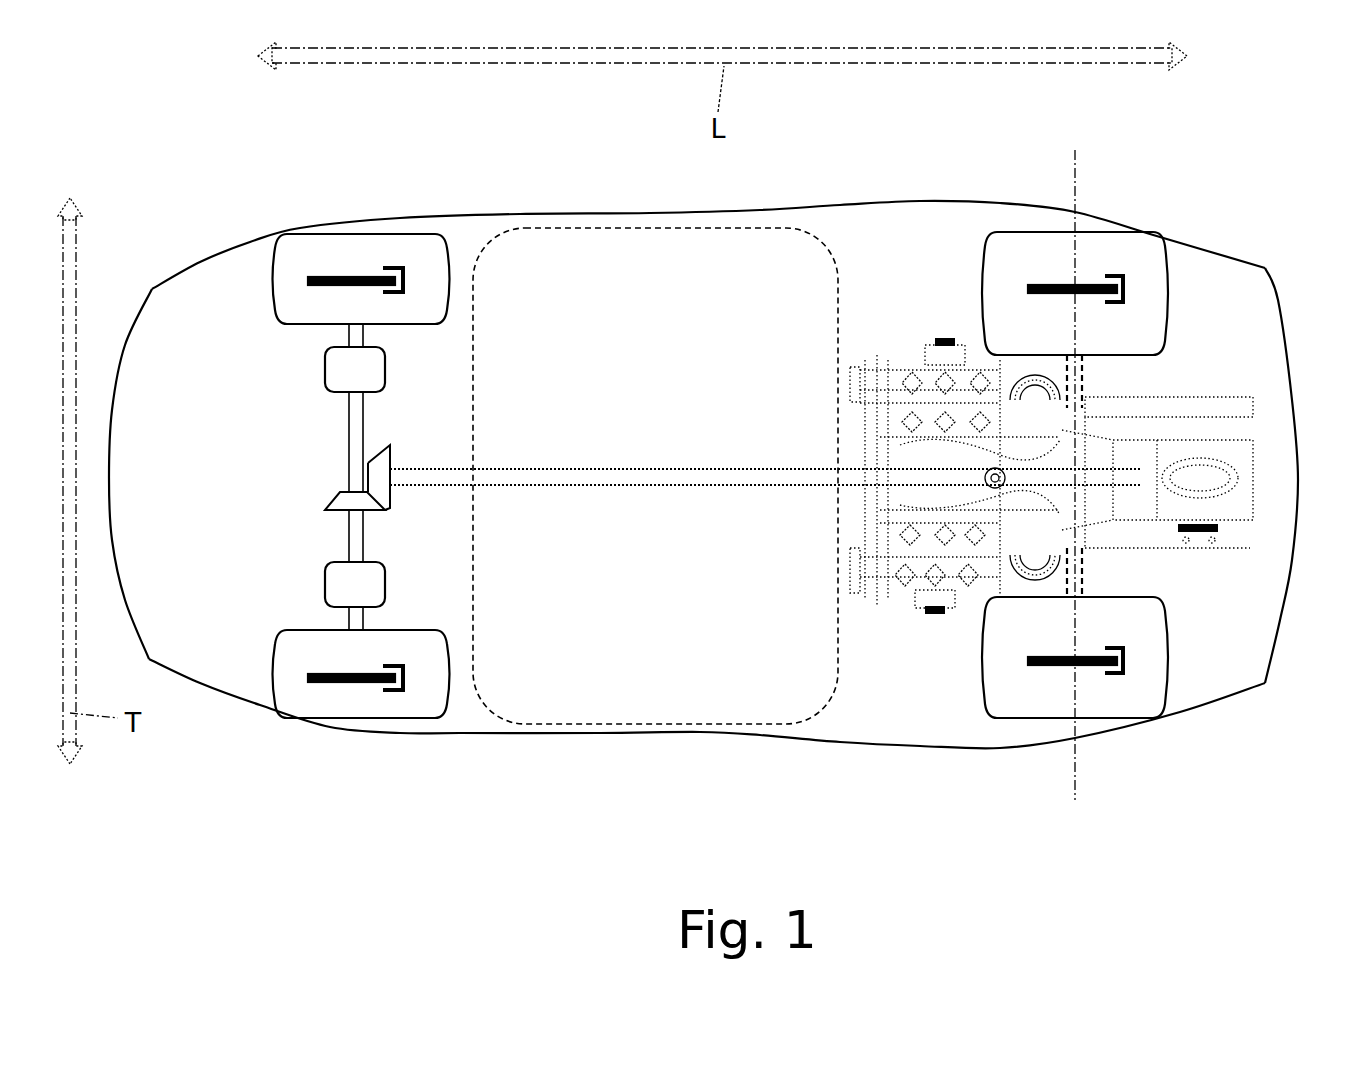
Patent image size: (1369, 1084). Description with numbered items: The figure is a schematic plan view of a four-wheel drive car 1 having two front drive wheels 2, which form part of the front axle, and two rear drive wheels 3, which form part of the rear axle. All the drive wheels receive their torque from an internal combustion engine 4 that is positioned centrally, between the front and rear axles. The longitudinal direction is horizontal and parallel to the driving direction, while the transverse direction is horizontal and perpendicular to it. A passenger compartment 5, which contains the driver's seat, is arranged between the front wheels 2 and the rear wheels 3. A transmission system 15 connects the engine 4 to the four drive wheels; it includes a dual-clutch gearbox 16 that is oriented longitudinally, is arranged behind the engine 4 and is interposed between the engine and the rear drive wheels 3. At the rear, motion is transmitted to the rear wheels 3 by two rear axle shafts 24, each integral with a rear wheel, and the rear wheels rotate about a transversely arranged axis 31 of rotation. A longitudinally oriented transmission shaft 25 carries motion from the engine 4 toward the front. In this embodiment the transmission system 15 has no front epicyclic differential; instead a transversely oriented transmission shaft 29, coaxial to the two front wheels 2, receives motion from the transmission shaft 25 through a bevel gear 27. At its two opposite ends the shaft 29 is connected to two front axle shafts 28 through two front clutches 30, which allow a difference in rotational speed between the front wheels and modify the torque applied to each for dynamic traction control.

The car 1 is at (1215, 866).
The front drive wheels 2 is at (418, 252).
The rear drive wheels 3 is at (1152, 250).
The internal combustion engine 4 is at (917, 302).
The passenger compartment 5 is at (734, 724).
The transmission system 15 is at (511, 778).
The dual-clutch gearbox 16 is at (1262, 424).
The rear axle shafts 24 is at (1083, 366).
The transmission shaft 25 is at (607, 487).
The bevel gear 27 is at (393, 526).
The front axle shafts 28 is at (356, 333).
The transmission shaft 29 is at (352, 430).
The front clutches 30 is at (353, 369).
The axis of rotation 31 is at (1066, 180).